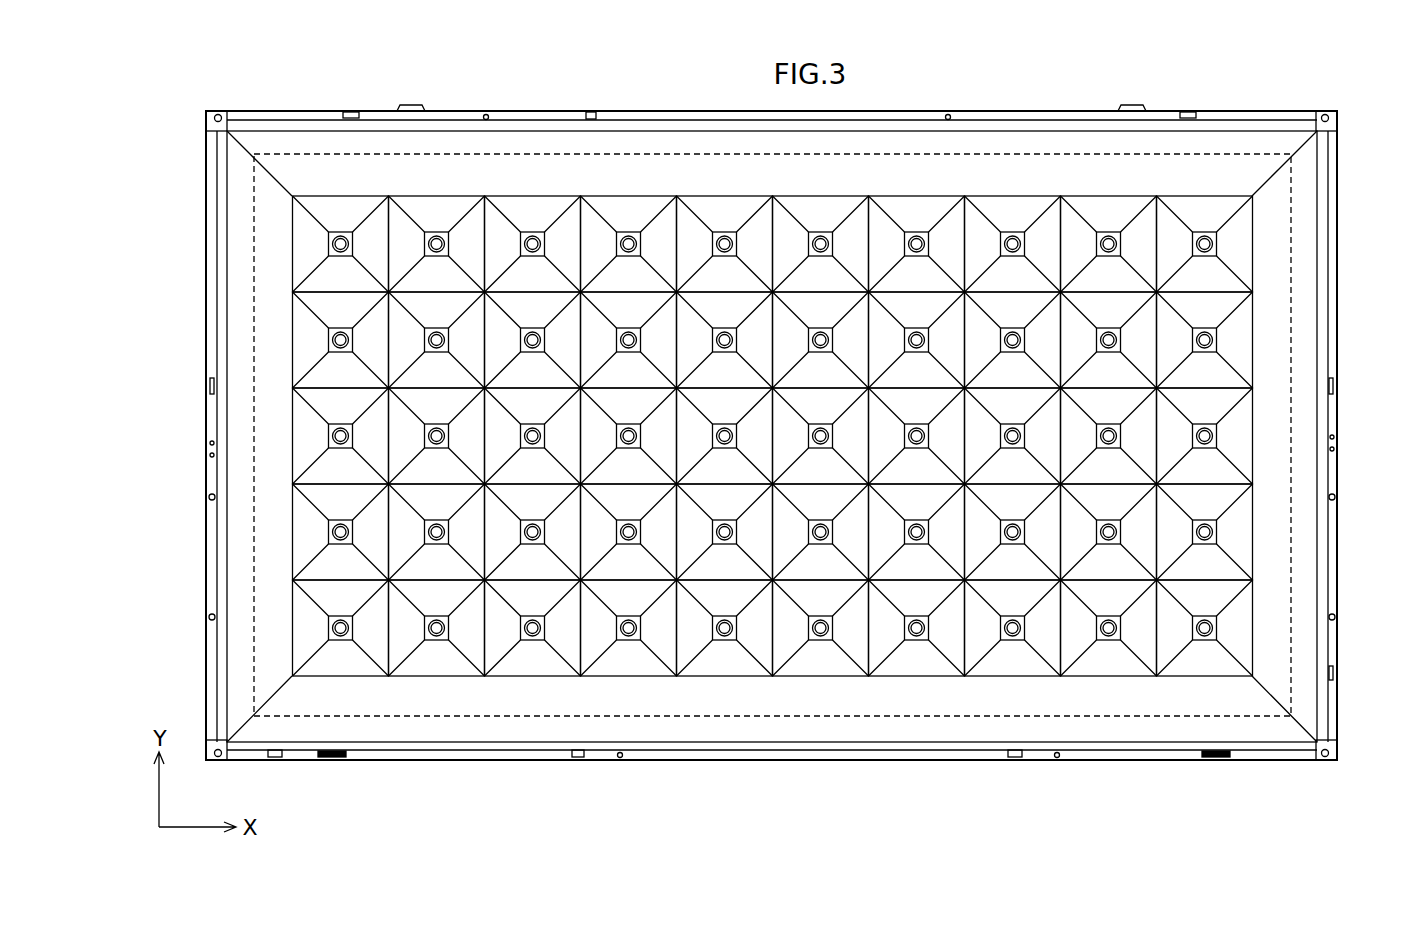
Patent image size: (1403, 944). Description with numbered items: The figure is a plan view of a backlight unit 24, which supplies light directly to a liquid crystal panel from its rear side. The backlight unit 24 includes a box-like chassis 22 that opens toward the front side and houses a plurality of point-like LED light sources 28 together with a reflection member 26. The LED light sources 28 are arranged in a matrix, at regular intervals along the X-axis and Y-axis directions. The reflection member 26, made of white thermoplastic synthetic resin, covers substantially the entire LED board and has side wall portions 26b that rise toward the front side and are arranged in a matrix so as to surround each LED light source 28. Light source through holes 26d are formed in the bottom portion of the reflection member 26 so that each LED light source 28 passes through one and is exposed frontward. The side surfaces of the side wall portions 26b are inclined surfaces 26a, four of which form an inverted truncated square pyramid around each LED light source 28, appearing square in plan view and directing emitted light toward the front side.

The chassis 22 is at (1338, 648).
The backlight unit 24 is at (711, 813).
The reflection member 26 is at (1328, 562).
The inclined surface 26a is at (300, 488).
The side wall portion 26b is at (677, 623).
The light source through hole 26d is at (1003, 528).
The LED light source 28 is at (436, 632).